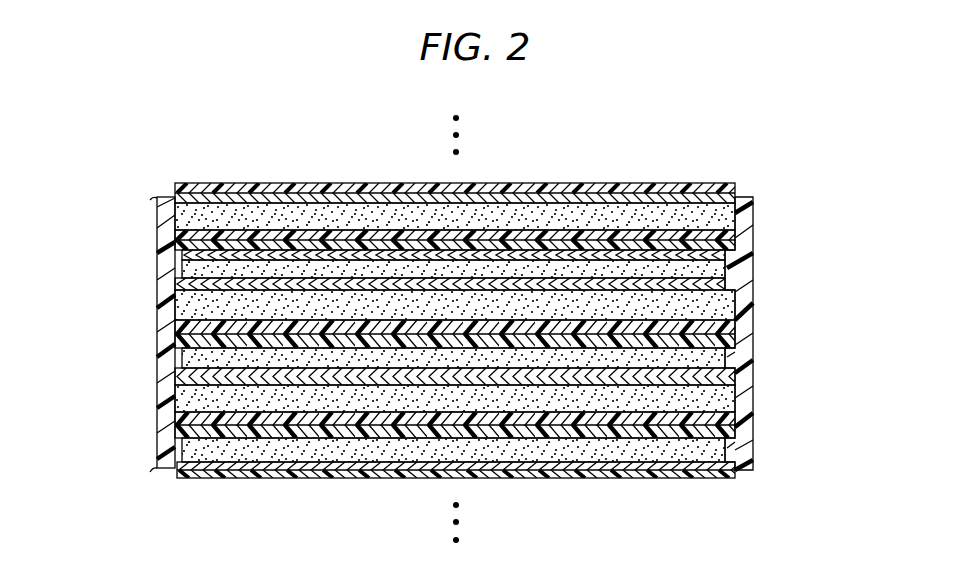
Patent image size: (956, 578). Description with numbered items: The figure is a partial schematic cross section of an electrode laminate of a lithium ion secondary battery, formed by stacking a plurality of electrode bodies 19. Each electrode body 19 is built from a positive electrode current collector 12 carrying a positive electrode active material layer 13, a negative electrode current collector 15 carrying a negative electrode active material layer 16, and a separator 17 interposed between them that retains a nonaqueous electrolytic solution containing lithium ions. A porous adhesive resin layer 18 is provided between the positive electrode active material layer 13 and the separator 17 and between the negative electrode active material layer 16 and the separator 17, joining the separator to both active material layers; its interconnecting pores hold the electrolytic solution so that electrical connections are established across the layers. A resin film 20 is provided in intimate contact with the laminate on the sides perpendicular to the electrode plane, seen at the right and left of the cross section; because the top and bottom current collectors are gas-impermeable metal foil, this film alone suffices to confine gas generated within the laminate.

The positive electrode current collector 12 is at (748, 316).
The positive electrode active material layer 13 is at (748, 295).
The negative electrode current collector 15 is at (752, 197).
The negative electrode active material layer 16 is at (748, 222).
The separator 17 is at (748, 258).
The porous adhesive resin layer 18 is at (748, 244).
The electrode body 19 is at (762, 375).
The resin film 20 is at (742, 191).